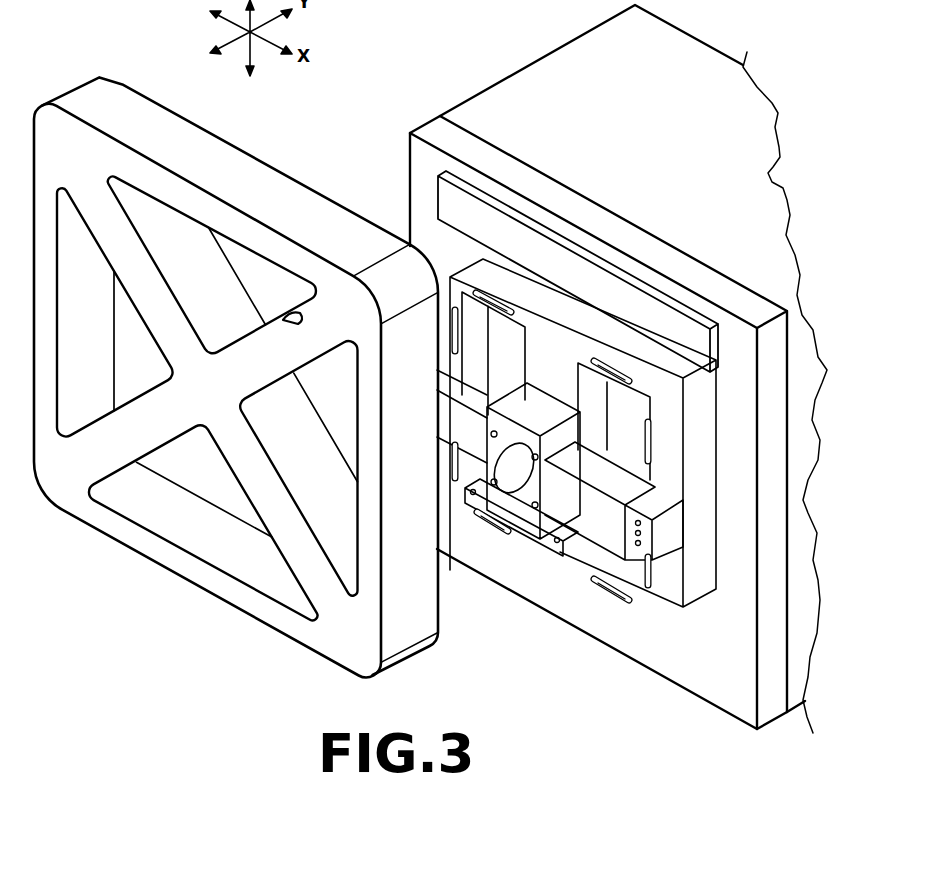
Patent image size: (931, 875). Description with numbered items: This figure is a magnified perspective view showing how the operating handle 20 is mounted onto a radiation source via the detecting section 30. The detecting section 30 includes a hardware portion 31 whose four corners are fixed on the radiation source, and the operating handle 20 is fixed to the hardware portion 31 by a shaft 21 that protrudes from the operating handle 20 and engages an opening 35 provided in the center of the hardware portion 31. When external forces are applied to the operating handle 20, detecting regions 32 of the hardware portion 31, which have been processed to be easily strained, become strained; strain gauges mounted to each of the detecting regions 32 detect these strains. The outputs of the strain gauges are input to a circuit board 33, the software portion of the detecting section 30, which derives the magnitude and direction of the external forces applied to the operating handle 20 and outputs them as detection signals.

The operating handle 20 is at (136, 106).
The shaft 21 is at (291, 318).
The detecting section 30 is at (432, 130).
The hardware portion 31 is at (652, 612).
The detecting regions 32 is at (500, 305).
The circuit board 33 is at (448, 198).
The opening 35 is at (517, 478).